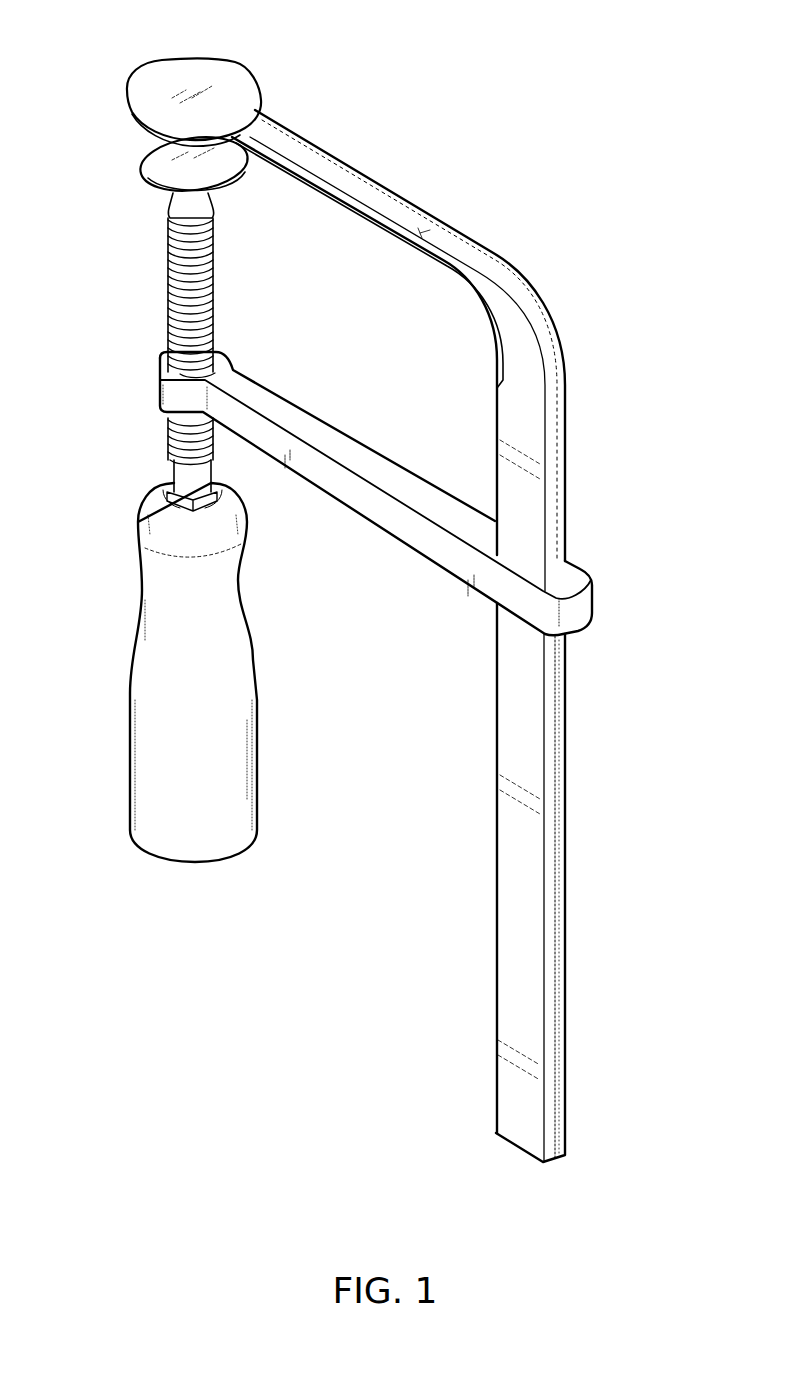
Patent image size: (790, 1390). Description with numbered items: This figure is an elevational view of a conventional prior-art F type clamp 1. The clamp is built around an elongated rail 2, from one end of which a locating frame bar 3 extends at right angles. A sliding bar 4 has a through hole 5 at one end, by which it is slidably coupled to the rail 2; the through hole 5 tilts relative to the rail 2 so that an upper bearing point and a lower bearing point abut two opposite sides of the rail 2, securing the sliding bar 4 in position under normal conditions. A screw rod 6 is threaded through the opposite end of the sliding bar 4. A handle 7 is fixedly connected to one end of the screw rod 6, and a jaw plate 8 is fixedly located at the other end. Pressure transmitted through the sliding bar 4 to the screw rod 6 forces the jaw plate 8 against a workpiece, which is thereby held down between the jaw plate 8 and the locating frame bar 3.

The F type clamp 1 is at (363, 581).
The rail 2 is at (538, 908).
The locating frame bar 3 is at (148, 78).
The sliding bar 4 is at (408, 493).
The through hole 5 is at (582, 574).
The screw rod 6 is at (168, 271).
The handle 7 is at (130, 690).
The jaw plate 8 is at (160, 171).